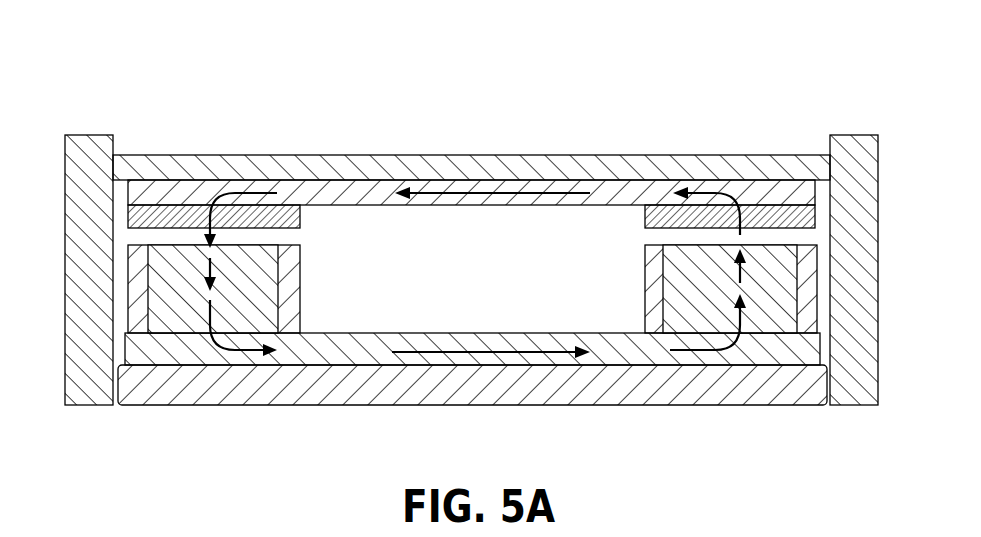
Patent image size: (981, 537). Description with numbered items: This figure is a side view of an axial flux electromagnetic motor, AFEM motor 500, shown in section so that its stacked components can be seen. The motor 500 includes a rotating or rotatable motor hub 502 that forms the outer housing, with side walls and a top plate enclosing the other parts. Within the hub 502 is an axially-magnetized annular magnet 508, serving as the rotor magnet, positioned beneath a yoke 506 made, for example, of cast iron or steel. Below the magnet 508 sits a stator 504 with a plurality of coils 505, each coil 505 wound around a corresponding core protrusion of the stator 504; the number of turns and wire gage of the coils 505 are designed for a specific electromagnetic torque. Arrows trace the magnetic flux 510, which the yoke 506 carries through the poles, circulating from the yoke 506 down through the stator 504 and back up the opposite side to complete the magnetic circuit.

The AFEM motor 500 is at (130, 57).
The motor hub 502 is at (852, 195).
The stator 504 is at (168, 318).
The coils 505 is at (140, 290).
The yoke 506 is at (745, 195).
The annular magnet 508 is at (140, 218).
The magnetic flux 510 is at (486, 193).